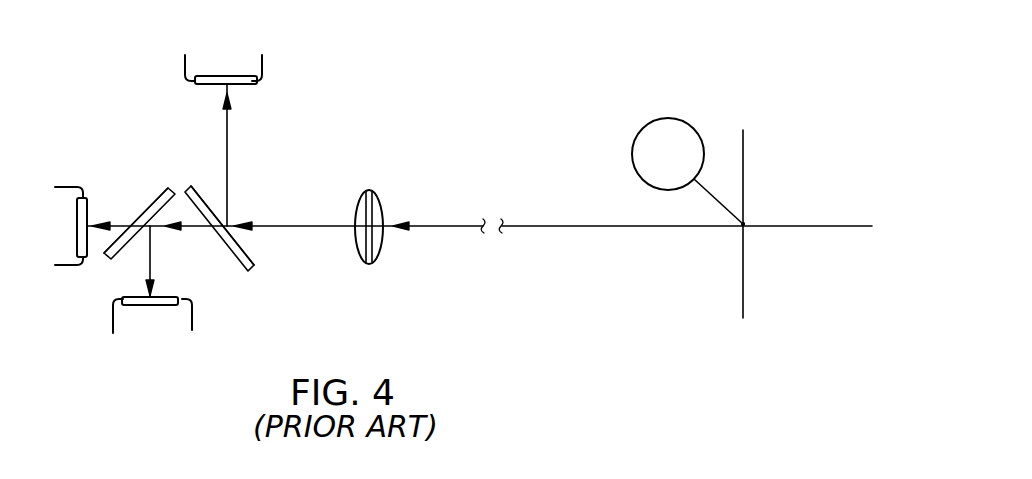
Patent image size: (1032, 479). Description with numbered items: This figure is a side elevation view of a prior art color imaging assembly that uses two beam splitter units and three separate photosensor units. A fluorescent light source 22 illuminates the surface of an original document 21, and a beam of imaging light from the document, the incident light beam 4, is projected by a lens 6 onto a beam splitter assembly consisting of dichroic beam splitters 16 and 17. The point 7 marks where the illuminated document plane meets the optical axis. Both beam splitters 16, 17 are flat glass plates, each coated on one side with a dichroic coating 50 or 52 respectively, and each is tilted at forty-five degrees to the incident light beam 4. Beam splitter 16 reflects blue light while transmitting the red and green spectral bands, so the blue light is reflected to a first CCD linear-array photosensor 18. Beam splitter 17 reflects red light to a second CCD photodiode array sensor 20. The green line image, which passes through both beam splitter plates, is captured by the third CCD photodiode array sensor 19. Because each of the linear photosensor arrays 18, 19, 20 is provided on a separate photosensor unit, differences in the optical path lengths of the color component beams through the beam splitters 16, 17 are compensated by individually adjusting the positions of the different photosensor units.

The incident light beam 4 is at (587, 226).
The lens 6 is at (380, 200).
The focal point on retina 7 is at (741, 228).
The dichroic beam splitter 16 is at (262, 254).
The dichroic beam splitter 17 is at (155, 196).
The first CCD linear-array photosensor 18 is at (215, 74).
The third CCD photodiode array sensor 19 is at (77, 227).
The second CCD photodiode array sensor 20 is at (158, 305).
The original document 21 is at (743, 307).
The fluorescent light source 22 is at (643, 131).
The dichroic coating 50 is at (200, 192).
The dichroic coating 52 is at (116, 258).